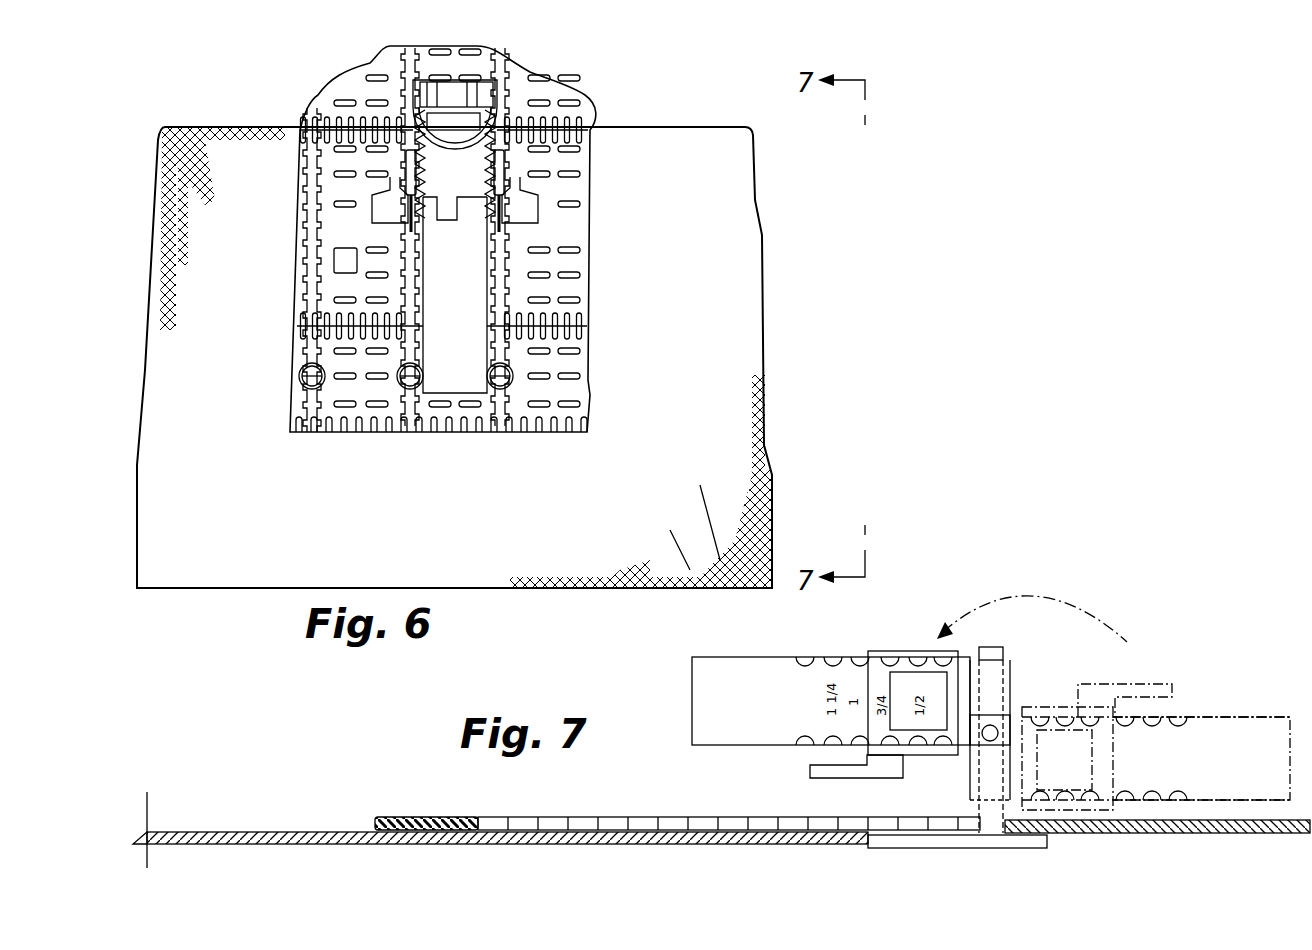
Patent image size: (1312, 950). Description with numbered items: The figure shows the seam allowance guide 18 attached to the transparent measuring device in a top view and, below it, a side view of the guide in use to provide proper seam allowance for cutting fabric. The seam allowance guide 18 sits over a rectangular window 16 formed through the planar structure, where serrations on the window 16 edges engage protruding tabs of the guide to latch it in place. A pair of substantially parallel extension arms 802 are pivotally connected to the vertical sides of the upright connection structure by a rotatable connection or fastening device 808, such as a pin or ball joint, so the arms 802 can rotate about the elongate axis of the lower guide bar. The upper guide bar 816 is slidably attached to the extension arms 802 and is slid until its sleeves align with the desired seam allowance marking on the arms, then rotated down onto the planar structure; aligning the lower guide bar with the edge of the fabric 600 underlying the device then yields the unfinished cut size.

In FIG. 6, the fabric 600 is at (740, 243).
In FIG. 6, the seam allowance guide 18 is at (582, 92).
In FIG. 6, the extension arms 802 is at (590, 183).
In FIG. 6, the upper guide bar 816 is at (590, 208).
In FIG. 6, the window 16 is at (460, 290).
In FIG. 7, the rotatable connection or fastening device 808 is at (992, 725).